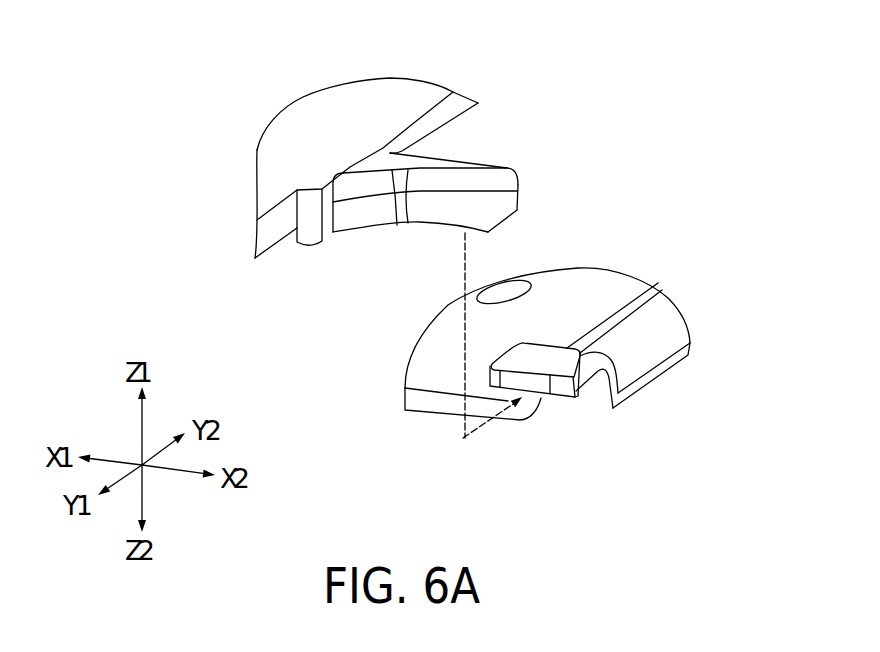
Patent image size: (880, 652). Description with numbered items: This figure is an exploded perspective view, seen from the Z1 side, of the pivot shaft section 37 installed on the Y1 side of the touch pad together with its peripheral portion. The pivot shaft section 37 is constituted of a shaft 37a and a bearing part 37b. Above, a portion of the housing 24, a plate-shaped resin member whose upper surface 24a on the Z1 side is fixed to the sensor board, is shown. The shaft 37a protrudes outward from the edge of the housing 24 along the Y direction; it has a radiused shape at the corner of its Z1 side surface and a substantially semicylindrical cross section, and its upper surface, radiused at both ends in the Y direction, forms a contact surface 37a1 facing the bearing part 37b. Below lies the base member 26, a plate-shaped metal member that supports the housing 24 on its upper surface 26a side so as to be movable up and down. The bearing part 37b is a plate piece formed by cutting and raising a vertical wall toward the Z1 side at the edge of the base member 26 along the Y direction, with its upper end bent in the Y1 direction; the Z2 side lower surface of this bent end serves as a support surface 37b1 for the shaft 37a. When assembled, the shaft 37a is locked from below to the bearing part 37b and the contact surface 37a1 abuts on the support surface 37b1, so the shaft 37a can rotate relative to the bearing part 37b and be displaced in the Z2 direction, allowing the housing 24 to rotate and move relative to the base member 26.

The pivot shaft section 37 is at (110, 60).
The housing 24 is at (375, 85).
The upper surface 24a is at (300, 123).
The shaft 37a is at (507, 192).
The contact surface 37a1 is at (476, 166).
The base member 26 is at (676, 382).
The upper surface 26a is at (600, 280).
The bearing part 37b is at (642, 320).
The support surface 37b1 is at (598, 378).